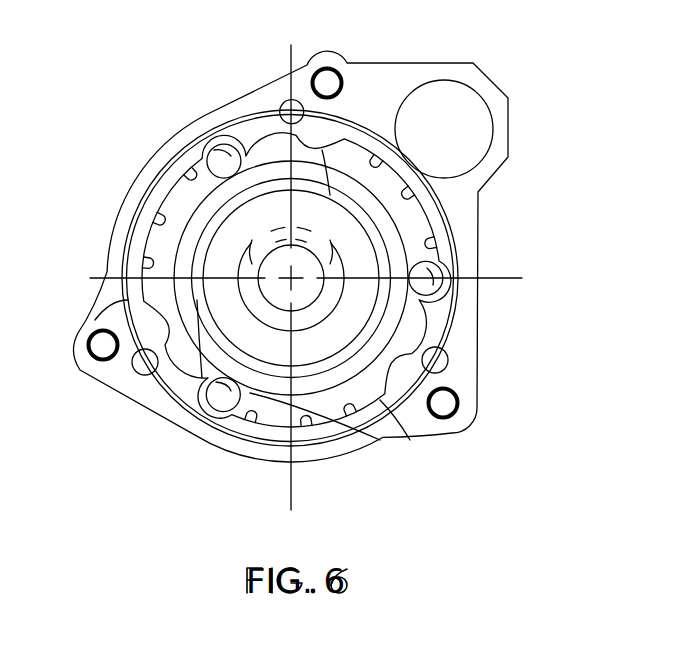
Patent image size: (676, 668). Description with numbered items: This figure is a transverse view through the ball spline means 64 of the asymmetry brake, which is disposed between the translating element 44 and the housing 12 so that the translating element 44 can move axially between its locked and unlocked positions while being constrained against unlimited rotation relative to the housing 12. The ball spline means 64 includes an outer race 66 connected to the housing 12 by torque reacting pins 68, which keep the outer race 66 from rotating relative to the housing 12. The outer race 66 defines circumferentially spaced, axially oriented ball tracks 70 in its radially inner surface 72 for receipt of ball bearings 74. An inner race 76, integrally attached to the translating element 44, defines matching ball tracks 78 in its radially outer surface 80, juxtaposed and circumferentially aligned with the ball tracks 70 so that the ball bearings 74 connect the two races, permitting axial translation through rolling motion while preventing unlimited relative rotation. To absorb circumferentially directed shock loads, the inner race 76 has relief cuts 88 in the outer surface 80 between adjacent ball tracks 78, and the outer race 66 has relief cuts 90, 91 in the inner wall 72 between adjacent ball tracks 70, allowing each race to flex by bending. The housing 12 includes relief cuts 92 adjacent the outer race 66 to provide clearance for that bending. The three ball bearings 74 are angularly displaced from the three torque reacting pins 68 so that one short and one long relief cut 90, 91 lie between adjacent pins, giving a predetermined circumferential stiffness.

The housing 12 is at (477, 75).
The translating element 44 is at (380, 440).
The ball spline means 64 is at (168, 424).
The outer race 66 is at (443, 233).
The torque reacting pins 68 is at (270, 105).
The ball tracks 70 is at (218, 142).
The radially inner surface 72 is at (430, 222).
The ball bearings 74 is at (225, 155).
The inner race 76 is at (398, 425).
The ball tracks 78 is at (205, 175).
The radially outer surface 80 is at (100, 327).
The relief cuts 88 is at (366, 63).
The relief cut 90 is at (285, 104).
The relief cut 91 is at (143, 275).
The relief cuts 92 is at (150, 222).